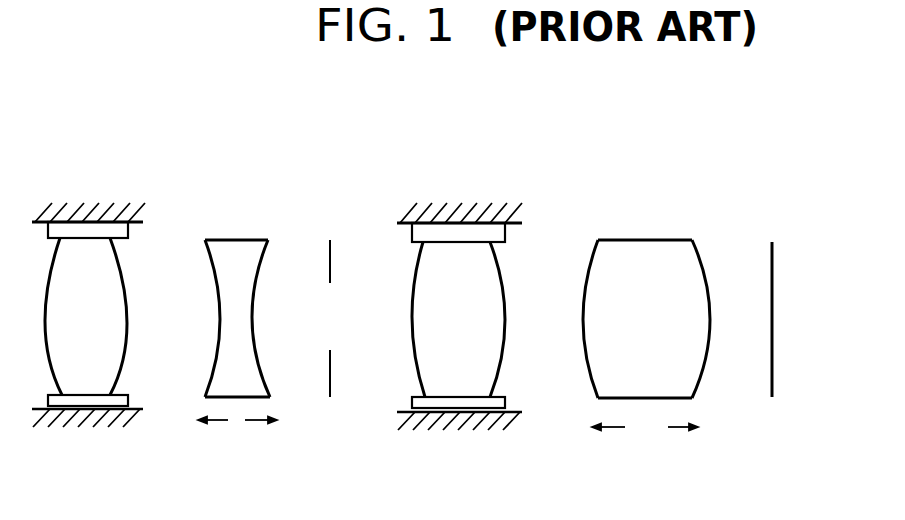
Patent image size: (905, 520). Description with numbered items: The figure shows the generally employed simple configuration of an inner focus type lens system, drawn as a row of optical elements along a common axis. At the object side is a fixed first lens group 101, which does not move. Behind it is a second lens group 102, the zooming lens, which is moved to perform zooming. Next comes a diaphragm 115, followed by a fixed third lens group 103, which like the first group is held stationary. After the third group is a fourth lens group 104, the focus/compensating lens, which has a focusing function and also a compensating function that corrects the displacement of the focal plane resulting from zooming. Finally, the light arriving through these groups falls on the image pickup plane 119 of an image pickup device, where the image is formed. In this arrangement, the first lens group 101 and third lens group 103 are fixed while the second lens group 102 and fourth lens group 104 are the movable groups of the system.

The first lens group 101 is at (120, 260).
The second lens group 102 is at (237, 252).
The diaphragm 115 is at (332, 248).
The third lens group 103 is at (477, 217).
The fourth lens group 104 is at (652, 240).
The image pickup plane 119 is at (772, 242).